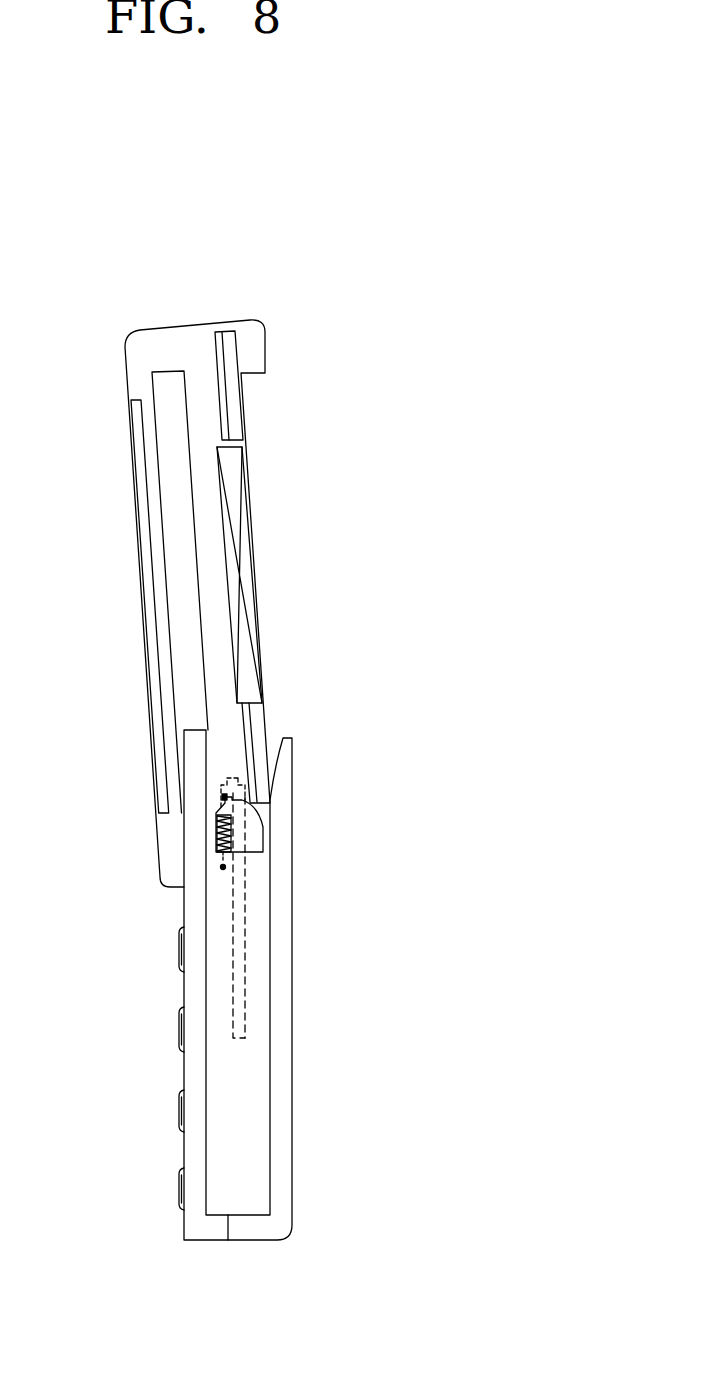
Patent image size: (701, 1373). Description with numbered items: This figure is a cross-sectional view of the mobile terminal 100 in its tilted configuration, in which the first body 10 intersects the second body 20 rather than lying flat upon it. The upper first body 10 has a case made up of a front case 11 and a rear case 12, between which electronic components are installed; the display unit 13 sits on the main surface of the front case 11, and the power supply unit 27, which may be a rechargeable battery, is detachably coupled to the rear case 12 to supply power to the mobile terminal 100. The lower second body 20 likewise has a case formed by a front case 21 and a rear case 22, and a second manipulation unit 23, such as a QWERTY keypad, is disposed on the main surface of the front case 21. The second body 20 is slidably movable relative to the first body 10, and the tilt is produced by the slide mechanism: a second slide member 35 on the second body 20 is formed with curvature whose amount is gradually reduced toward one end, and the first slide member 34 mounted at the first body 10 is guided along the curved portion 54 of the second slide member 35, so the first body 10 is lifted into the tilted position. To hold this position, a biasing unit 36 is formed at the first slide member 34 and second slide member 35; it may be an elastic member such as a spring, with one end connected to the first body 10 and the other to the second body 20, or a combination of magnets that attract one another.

The mobile terminal 100 is at (365, 291).
The first body 10 is at (120, 375).
The front case 11 is at (150, 332).
The rear case 12 is at (191, 328).
The display unit 13 is at (143, 578).
The power supply unit 27 is at (247, 582).
The second body 20 is at (298, 1075).
The front case 21 is at (207, 1242).
The rear case 22 is at (247, 1242).
The second manipulation unit 23 is at (180, 1028).
The first slide member 34 is at (267, 825).
The second slide member 35 is at (240, 985).
The biasing unit 36 is at (217, 830).
The curved portion 54 is at (248, 883).